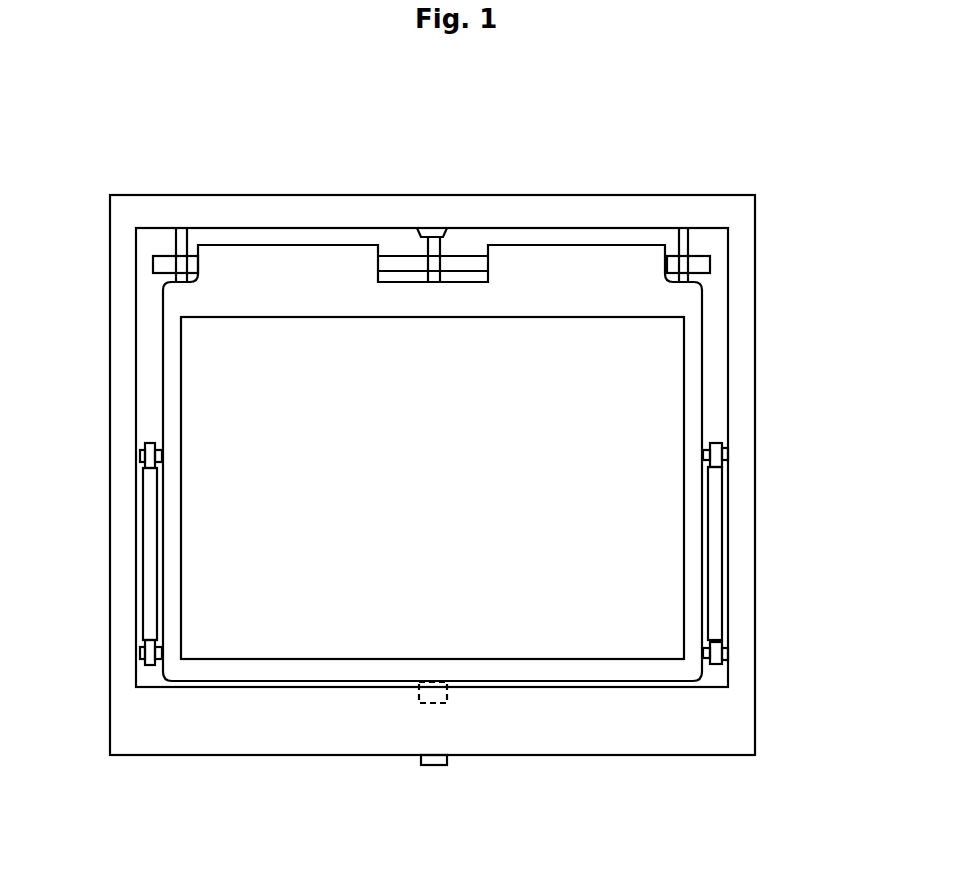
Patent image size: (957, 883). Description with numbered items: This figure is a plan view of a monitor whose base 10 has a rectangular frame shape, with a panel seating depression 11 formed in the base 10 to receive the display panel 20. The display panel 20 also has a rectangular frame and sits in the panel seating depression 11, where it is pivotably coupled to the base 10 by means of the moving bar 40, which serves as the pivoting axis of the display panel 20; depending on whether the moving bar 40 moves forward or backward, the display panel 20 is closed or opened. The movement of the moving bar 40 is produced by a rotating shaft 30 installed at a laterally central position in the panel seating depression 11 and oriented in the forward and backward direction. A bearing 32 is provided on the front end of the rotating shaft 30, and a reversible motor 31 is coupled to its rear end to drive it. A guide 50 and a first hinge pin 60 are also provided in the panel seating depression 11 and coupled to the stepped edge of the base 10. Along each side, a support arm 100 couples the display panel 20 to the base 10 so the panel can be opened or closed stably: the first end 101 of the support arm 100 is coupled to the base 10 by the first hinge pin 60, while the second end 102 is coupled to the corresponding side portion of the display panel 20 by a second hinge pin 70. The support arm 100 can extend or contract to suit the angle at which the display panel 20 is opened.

The base 10 is at (635, 192).
The panel seating depression 11 is at (713, 363).
The display panel 20 is at (202, 506).
The rotating shaft 30 is at (417, 229).
The motor 31 is at (438, 685).
The bearing 32 is at (450, 229).
The moving bar 40 is at (703, 265).
The guide 50 is at (687, 240).
The first hinge pin 60 is at (730, 647).
The second hinge pin 70 is at (723, 458).
The support arm 100 is at (718, 558).
The first end 101 is at (728, 662).
The second end 102 is at (728, 446).